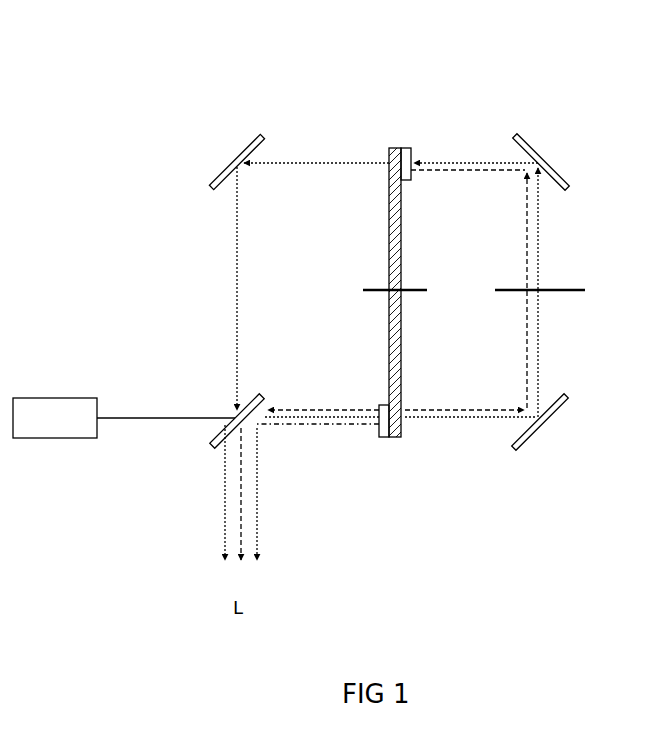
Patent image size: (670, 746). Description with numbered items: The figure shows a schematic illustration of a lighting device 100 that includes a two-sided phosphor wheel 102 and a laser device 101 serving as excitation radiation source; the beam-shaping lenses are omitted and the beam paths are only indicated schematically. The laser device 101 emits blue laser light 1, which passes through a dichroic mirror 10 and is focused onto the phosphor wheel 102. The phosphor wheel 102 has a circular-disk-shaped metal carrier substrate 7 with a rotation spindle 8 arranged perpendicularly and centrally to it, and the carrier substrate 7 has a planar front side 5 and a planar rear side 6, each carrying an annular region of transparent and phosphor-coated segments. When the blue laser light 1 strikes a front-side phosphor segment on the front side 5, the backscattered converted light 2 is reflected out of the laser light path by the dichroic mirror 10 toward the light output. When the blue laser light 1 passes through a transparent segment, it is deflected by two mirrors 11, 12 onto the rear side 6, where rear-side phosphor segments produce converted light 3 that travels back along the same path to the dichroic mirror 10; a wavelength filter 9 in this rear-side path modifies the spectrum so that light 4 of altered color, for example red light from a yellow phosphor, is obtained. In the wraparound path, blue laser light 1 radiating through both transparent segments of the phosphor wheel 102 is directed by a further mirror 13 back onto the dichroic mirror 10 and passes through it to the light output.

The lighting device 100 is at (447, 73).
The laser device 101 is at (55, 439).
The phosphor wheel 102 is at (392, 480).
The dichroic mirror 10 is at (216, 440).
The further mirror 13 is at (222, 151).
The mirror 12 is at (553, 168).
The mirror 11 is at (538, 440).
The front side 5 is at (386, 237).
The rear side 6 is at (405, 353).
The carrier substrate 7 is at (401, 262).
The rotation spindle 8 is at (370, 295).
The wavelength filter 9 is at (560, 290).
The blue laser light 1 is at (324, 355).
The converted light 2 is at (305, 488).
The converted light 3 is at (469, 289).
The light 4 is at (390, 451).